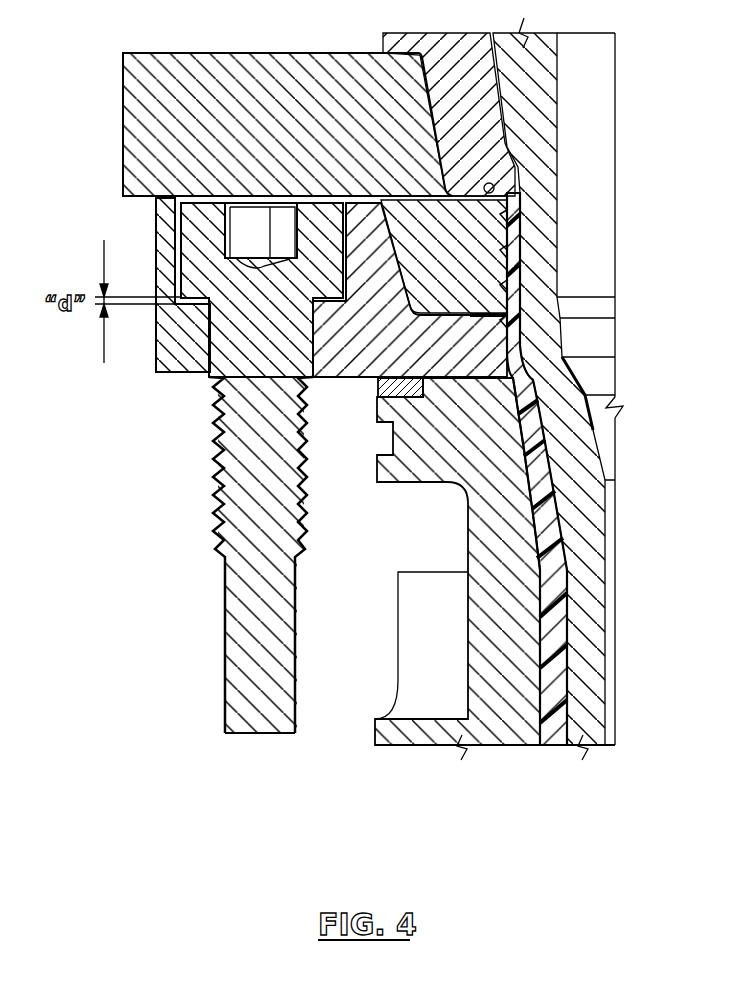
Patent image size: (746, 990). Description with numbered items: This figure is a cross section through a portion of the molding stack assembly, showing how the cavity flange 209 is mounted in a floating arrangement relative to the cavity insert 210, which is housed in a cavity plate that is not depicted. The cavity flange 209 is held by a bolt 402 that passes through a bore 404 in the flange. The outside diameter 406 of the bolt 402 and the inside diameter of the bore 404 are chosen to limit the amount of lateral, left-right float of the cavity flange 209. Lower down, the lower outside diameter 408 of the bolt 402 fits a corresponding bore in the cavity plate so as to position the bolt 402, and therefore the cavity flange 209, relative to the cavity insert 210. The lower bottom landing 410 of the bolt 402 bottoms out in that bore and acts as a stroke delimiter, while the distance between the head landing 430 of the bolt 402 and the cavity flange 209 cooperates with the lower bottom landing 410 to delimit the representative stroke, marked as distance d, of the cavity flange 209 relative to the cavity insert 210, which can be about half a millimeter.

The cavity flange 209 is at (170, 350).
The outside diameter 406 is at (203, 323).
The bore 404 is at (307, 352).
The bolt 402 is at (243, 635).
The lower outside diameter 408 is at (295, 673).
The lower bottom landing 410 is at (237, 733).
The cavity insert 210 is at (493, 723).
The head landing 430 is at (325, 307).